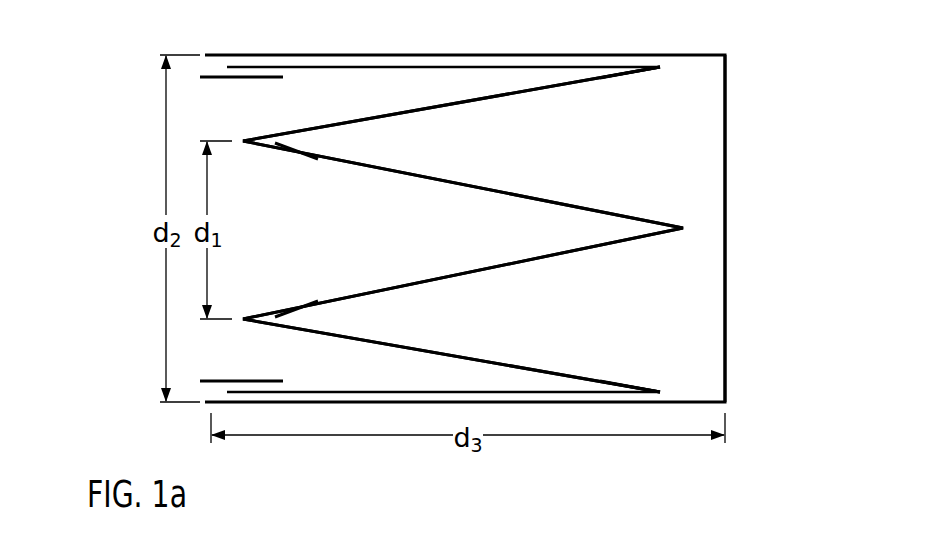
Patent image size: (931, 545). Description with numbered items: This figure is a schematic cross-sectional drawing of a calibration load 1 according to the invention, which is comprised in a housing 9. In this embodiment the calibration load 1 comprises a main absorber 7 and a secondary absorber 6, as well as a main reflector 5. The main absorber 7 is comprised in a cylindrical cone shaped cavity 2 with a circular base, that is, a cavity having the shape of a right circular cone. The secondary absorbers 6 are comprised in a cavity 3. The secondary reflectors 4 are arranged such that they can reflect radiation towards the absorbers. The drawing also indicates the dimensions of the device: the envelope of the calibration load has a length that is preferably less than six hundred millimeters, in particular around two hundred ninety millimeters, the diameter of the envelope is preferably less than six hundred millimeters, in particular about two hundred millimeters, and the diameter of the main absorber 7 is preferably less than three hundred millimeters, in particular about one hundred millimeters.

The calibration load 1 is at (744, 50).
The cylindrical cone shaped cavity 2 is at (650, 216).
The cavity 3 is at (622, 77).
The secondary reflector 4 is at (212, 75).
The main reflector 5 is at (441, 111).
The secondary absorber 6 is at (362, 68).
The main absorber 7 is at (468, 186).
The housing 9 is at (727, 257).